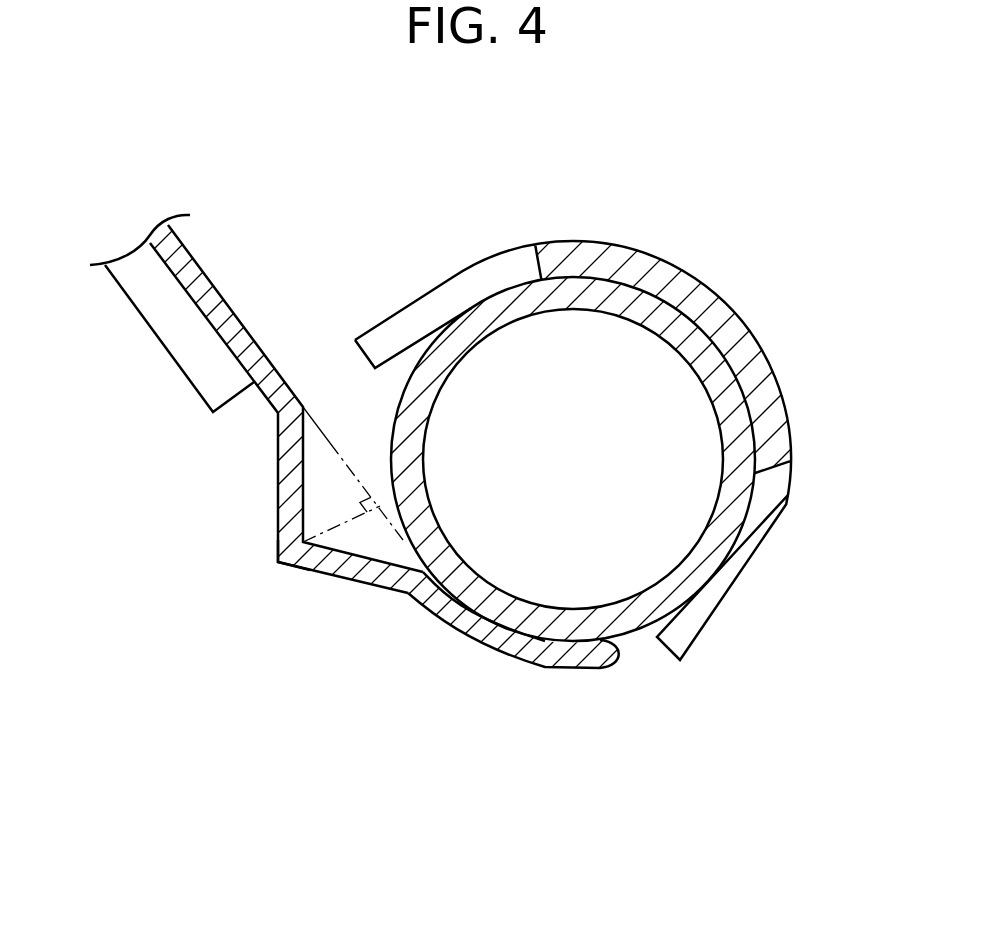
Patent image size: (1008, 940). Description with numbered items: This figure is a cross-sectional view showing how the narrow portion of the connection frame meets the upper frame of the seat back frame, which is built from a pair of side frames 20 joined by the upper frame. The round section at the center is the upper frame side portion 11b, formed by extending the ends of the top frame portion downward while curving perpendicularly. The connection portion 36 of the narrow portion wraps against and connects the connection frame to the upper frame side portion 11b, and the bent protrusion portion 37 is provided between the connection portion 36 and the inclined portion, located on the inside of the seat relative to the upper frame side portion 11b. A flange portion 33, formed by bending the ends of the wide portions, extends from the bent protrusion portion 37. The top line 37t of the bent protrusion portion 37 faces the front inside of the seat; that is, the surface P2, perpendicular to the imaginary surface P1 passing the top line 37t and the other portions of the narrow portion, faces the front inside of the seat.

The side frame 20 is at (748, 254).
The flange portion 33 is at (165, 318).
The bent protrusion portion 37 is at (343, 580).
The top line 37t is at (278, 562).
The connection portion 36 is at (562, 658).
The upper frame side portion 11b is at (632, 639).
The imaginary surface P1 is at (331, 444).
The surface P2 is at (340, 525).